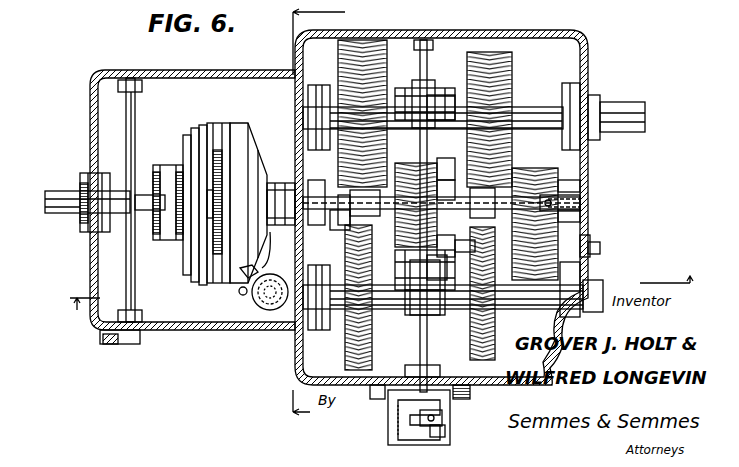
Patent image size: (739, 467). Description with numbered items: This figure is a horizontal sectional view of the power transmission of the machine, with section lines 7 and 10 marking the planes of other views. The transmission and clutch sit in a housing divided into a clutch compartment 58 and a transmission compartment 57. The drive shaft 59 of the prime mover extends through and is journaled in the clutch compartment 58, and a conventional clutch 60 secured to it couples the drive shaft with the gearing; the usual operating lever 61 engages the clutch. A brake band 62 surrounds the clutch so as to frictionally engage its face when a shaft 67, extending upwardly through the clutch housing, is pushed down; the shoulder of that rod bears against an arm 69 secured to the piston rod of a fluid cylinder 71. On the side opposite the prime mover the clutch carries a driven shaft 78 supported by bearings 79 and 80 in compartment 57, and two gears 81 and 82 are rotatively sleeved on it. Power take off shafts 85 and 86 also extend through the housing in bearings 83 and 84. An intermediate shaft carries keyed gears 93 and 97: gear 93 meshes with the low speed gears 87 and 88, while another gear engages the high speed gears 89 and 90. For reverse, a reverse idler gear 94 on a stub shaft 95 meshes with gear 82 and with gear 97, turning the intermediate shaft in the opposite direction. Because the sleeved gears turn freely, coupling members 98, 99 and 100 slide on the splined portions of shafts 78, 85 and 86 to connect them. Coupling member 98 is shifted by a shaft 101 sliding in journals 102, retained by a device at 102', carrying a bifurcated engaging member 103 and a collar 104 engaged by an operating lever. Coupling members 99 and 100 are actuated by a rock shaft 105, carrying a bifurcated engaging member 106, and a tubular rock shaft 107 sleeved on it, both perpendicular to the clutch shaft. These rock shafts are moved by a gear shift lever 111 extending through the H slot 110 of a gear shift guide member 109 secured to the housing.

The section line 7 is at (387, 303).
The section line 10 is at (319, 216).
The transmission compartment 57 is at (465, 30).
The clutch compartment 58 is at (178, 72).
The drive shaft 59 is at (58, 192).
The clutch 60 is at (218, 125).
The operating lever 61 is at (160, 170).
The brake band 62 is at (245, 128).
The shaft 67 is at (331, 229).
The arm 69 is at (239, 293).
The fluid cylinder 71 is at (258, 306).
The driven shaft 78 is at (282, 188).
The bearing 79 is at (314, 180).
The bearing 80 is at (580, 192).
The gear 81 is at (448, 183).
The gear 82 is at (578, 178).
The bearing 83 is at (318, 85).
The bearing 84 is at (316, 328).
The power take off shaft 85 is at (648, 111).
The power take off shaft 86 is at (603, 288).
The low speed gear 87 is at (372, 50).
The low speed gear 88 is at (345, 358).
The high speed gear 89 is at (514, 58).
The high speed gear 90 is at (485, 362).
The gear 93 is at (387, 249).
The reverse idler gear 94 is at (592, 240).
The stub shaft 95 is at (600, 250).
The gear 97 is at (528, 167).
The coupling member 98 is at (456, 246).
The coupling member 99 is at (440, 95).
The coupling member 100 is at (400, 320).
The shaft 101 is at (451, 164).
The journals 102 is at (595, 192).
The retaining device 102' is at (598, 214).
The bifurcated engaging member 103 is at (418, 320).
The collar 104 is at (340, 220).
The rock shaft 105 is at (430, 62).
The bifurcated engaging member 106 is at (420, 100).
The tubular rock shaft 107 is at (430, 330).
The gear shift guide member 109 is at (390, 427).
The H slot 110 is at (442, 418).
The gear shift lever 111 is at (445, 434).